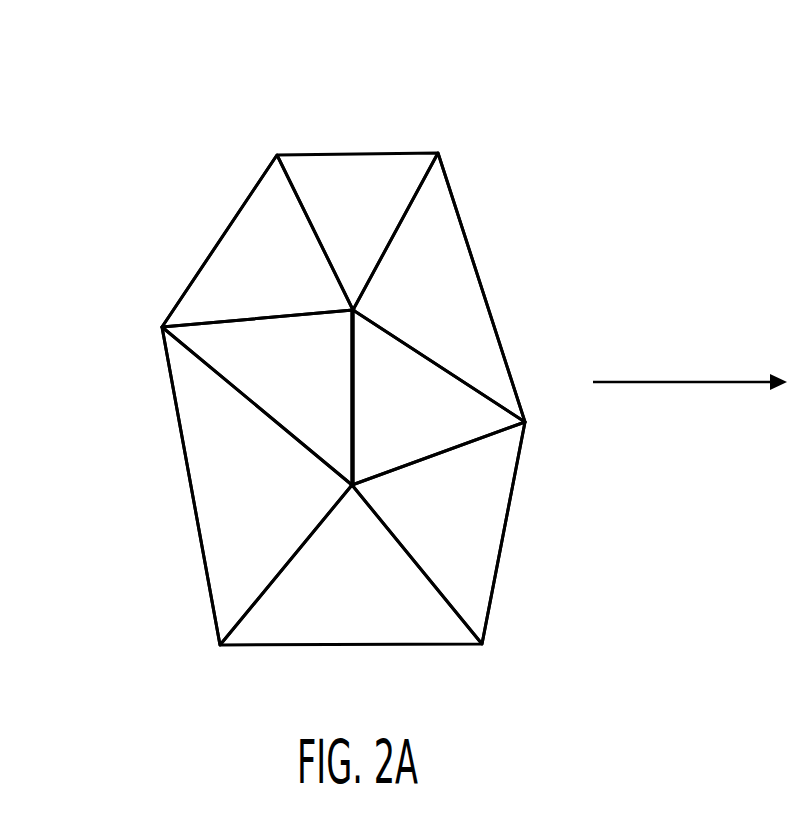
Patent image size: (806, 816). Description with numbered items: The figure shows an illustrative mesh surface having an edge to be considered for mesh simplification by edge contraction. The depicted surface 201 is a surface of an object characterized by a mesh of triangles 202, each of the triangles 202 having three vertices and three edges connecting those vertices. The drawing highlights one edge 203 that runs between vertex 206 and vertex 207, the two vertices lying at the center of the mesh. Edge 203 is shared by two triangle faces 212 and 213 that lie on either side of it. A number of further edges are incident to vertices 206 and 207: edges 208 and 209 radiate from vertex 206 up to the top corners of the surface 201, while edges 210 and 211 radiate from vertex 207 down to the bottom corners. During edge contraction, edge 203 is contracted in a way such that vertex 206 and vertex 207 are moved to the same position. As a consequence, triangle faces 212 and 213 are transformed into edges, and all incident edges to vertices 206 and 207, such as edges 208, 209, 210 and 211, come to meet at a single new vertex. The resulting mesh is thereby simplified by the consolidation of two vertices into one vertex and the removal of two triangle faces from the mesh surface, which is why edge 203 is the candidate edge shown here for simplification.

The surface 201 is at (118, 116).
The triangles 202 is at (193, 295).
The edge 203 is at (355, 410).
The vertex 206 is at (355, 310).
The vertex 207 is at (353, 487).
The edge 208 is at (310, 213).
The edge 209 is at (420, 192).
The edge 210 is at (293, 552).
The edge 211 is at (408, 556).
The triangle face 212 is at (300, 335).
The triangle face 213 is at (400, 363).